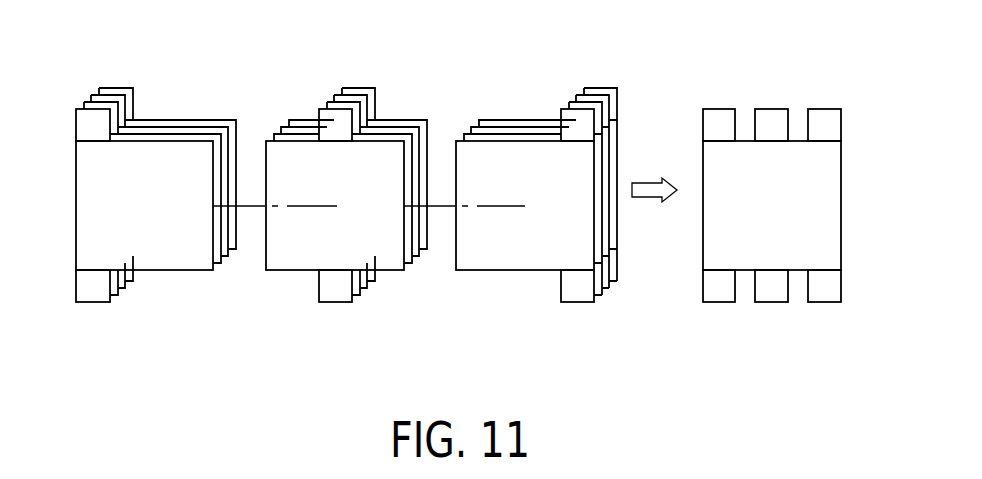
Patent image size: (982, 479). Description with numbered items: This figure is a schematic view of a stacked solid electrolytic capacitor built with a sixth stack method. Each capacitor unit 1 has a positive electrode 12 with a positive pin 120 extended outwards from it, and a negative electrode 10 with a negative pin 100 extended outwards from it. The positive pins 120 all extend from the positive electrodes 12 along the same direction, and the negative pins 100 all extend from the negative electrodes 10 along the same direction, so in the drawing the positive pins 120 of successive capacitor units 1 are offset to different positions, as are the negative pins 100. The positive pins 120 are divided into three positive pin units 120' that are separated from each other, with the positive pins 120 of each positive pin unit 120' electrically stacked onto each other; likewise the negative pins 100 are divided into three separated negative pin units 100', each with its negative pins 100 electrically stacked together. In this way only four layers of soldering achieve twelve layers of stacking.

The capacitor unit 1 is at (197, 273).
The negative electrode 10 is at (92, 273).
The negative pin 100 is at (377, 323).
The positive electrode 12 is at (92, 140).
The positive pin 120 is at (369, 157).
The negative pin unit 100' is at (755, 334).
The positive pin unit 120' is at (773, 87).